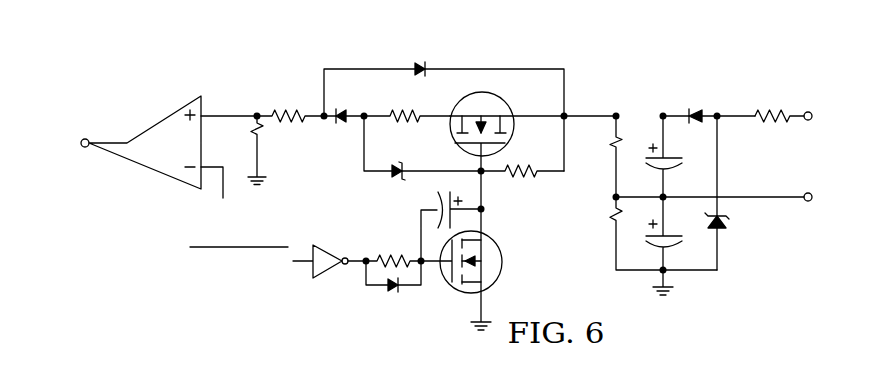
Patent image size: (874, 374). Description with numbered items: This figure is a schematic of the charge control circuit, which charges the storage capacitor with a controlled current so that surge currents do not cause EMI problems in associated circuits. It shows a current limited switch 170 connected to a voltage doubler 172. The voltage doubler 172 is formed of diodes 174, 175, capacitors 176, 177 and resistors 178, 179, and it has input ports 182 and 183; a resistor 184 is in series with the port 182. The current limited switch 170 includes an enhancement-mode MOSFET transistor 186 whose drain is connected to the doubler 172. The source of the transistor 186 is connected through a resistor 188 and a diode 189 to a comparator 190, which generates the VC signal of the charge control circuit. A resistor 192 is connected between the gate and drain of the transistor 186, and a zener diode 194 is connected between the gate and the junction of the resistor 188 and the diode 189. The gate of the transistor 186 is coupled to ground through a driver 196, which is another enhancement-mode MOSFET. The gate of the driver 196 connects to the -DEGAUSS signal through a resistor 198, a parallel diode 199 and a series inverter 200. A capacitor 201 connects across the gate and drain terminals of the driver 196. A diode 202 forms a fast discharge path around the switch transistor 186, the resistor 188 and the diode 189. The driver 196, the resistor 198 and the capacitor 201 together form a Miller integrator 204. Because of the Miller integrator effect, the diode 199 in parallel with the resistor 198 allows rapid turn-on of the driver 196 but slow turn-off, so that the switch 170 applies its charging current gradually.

The current limited switch 170 is at (587, 93).
The voltage doubler 172 is at (723, 103).
The diode 174 is at (682, 104).
The diode 175 is at (733, 193).
The capacitor 176 is at (675, 156).
The capacitor 177 is at (676, 233).
The resistor 178 is at (597, 156).
The resistor 179 is at (644, 233).
The input port 182 is at (829, 117).
The input port 183 is at (735, 197).
The resistor 184 is at (777, 131).
The enhancement-mode MOSFET transistor 186 is at (507, 127).
The resistor 188 is at (407, 103).
The diode 189 is at (340, 131).
The comparator 190 is at (165, 158).
The resistor 192 is at (522, 184).
The zener diode 194 is at (422, 148).
The driver 196 is at (484, 250).
The resistor 198 is at (393, 247).
The diode 199 is at (381, 288).
The inverter 200 is at (278, 248).
The capacitor 201 is at (436, 222).
The diode 202 is at (444, 107).
The Miller integrator 204 is at (387, 220).